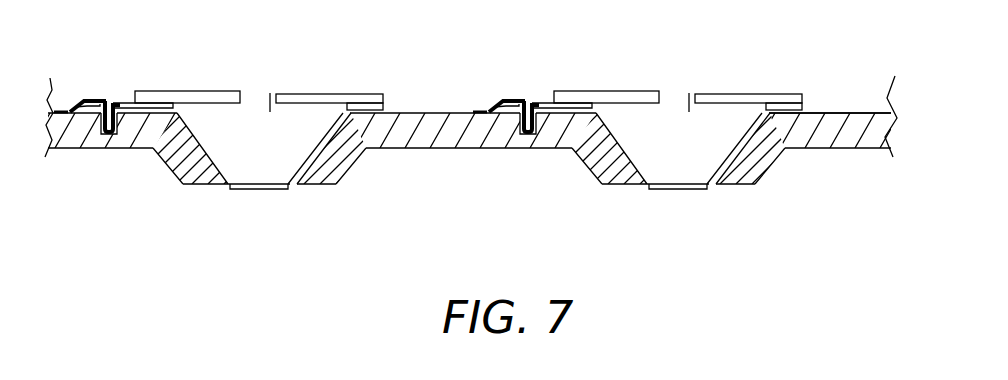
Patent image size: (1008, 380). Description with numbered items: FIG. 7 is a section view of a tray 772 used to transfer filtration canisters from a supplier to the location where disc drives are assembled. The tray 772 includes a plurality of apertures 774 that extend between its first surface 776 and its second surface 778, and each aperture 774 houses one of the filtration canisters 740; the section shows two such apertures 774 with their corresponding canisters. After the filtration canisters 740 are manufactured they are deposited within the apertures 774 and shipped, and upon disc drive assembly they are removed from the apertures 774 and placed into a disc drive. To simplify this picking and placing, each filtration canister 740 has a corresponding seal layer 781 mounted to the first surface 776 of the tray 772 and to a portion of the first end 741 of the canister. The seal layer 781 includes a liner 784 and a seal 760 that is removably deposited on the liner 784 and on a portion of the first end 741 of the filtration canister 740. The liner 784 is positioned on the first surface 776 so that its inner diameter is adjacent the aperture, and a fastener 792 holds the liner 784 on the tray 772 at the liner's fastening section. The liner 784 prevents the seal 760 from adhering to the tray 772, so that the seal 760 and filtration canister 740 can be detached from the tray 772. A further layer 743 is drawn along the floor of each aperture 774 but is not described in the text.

The filtration canister 740 is at (323, 142).
The first end 741 is at (294, 112).
The cavity floor layer 743 is at (268, 188).
The seal 760 is at (167, 93).
The tray 772 is at (489, 127).
The aperture 774 is at (197, 155).
The first surface 776 is at (855, 112).
The second surface 778 is at (830, 148).
The seal layer 781 is at (271, 93).
The liner 784 is at (110, 100).
The fastener 792 is at (73, 108).